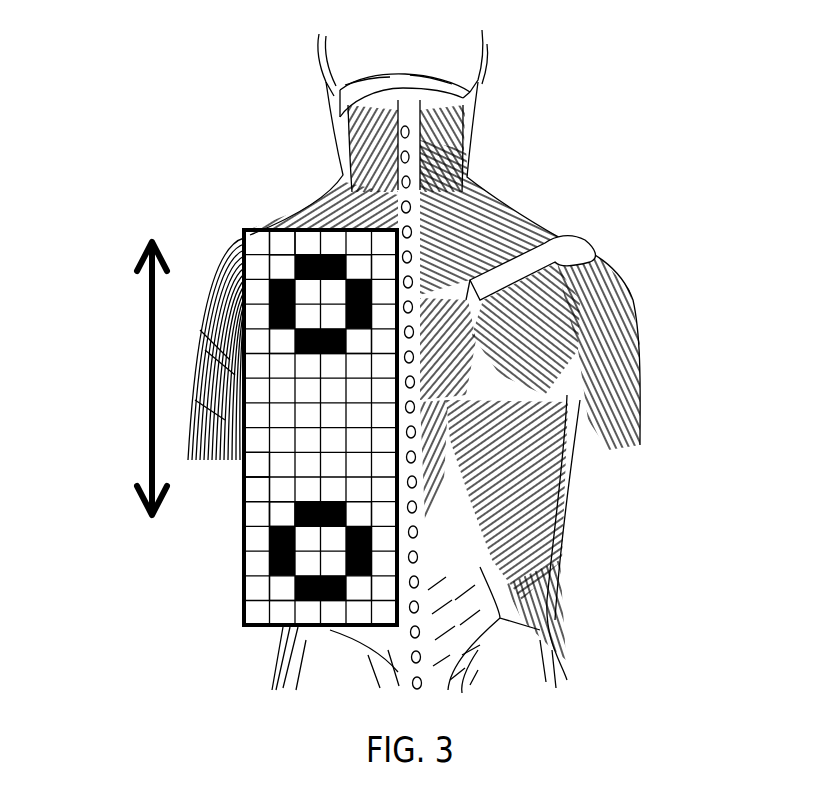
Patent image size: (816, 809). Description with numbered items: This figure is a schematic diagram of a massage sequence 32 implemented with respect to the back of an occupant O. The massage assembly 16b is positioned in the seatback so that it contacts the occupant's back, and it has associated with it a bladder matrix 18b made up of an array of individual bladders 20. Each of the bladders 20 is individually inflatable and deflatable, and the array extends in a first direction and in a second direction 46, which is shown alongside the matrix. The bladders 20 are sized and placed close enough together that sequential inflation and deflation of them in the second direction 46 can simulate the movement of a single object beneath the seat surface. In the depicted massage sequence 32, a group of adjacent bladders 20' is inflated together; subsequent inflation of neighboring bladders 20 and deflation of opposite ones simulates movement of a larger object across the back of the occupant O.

The occupant O is at (489, 190).
The massage assembly 16b is at (261, 228).
The bladder matrix 18b is at (283, 232).
The inflatable bladders 20 is at (236, 489).
The inflated bladders 20' is at (271, 414).
The massage sequence 32 is at (364, 339).
The second direction 46 is at (144, 373).